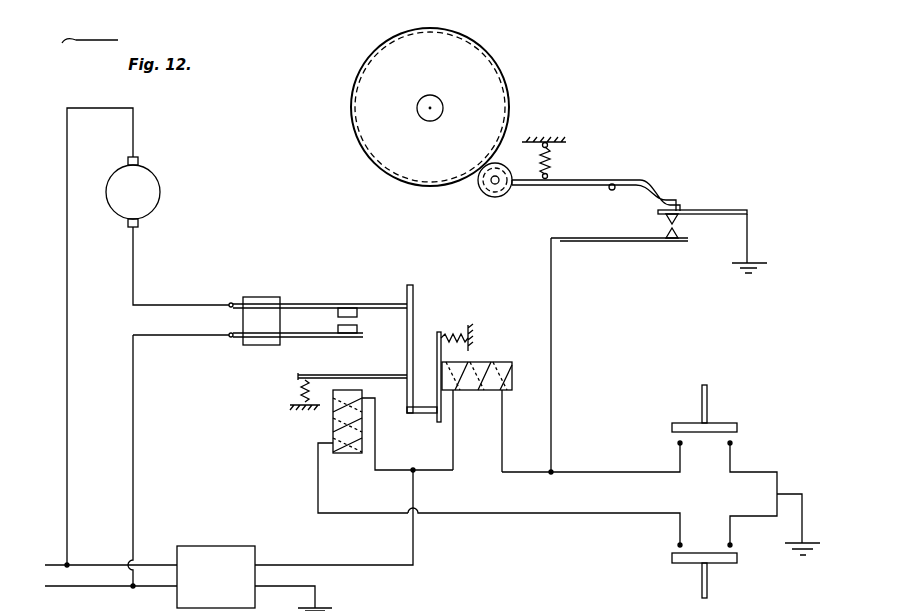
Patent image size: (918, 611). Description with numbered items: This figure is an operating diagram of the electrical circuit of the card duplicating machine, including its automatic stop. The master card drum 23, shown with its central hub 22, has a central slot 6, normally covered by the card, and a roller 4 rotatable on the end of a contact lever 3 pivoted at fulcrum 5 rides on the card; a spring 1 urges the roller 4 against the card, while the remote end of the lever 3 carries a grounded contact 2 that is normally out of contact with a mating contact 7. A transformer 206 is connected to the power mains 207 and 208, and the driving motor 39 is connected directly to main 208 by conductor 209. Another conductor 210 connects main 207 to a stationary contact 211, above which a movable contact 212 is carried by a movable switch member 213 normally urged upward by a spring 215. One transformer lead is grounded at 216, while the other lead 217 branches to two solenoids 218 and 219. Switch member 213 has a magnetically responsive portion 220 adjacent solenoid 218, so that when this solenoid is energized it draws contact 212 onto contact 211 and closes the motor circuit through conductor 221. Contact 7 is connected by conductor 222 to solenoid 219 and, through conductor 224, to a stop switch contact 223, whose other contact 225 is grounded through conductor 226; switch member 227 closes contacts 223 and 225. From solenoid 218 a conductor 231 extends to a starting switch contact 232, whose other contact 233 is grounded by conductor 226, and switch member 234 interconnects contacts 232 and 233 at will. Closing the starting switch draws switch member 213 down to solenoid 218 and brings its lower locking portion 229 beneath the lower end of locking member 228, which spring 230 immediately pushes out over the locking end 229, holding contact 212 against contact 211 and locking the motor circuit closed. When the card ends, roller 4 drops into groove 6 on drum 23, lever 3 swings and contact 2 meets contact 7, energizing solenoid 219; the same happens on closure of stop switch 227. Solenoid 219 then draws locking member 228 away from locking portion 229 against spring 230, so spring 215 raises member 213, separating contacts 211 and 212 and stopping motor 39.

The spring 1 is at (549, 162).
The contact 2 is at (665, 220).
The contact lever 3 is at (583, 187).
The roller 4 is at (503, 196).
The fulcrum 5 is at (612, 191).
The central slot 6 is at (416, 184).
The contact 7 is at (678, 233).
The shaft 22 is at (417, 107).
The master card drum 23 is at (368, 157).
The driving motor 39 is at (160, 192).
The transformer 206 is at (208, 548).
The power main 207 is at (150, 588).
The power main 208 is at (153, 564).
The conductor 209 is at (66, 350).
The conductor 210 is at (135, 408).
The stationary contact 211 is at (340, 334).
The movable contact 212 is at (343, 307).
The movable switch member 213 is at (414, 305).
The spring 215 is at (297, 385).
The ground 216 is at (318, 593).
The lead 217 is at (415, 548).
The solenoid 218 is at (332, 433).
The solenoid 219 is at (479, 391).
The magnetically responsive portion 220 is at (362, 374).
The conductor 221 is at (170, 304).
The conductor 222 is at (552, 358).
The stop switch contact 223 is at (678, 443).
The conductor 224 is at (596, 471).
The contact 225 is at (732, 443).
The conductor 226 is at (790, 493).
The switch member 227 is at (708, 398).
The locking member 228 is at (439, 424).
The lower locking portion 229 is at (420, 414).
The spring 230 is at (450, 335).
The conductor 231 is at (532, 515).
The starting switch contact 232 is at (678, 545).
The contact 233 is at (732, 545).
The switch member 234 is at (702, 591).